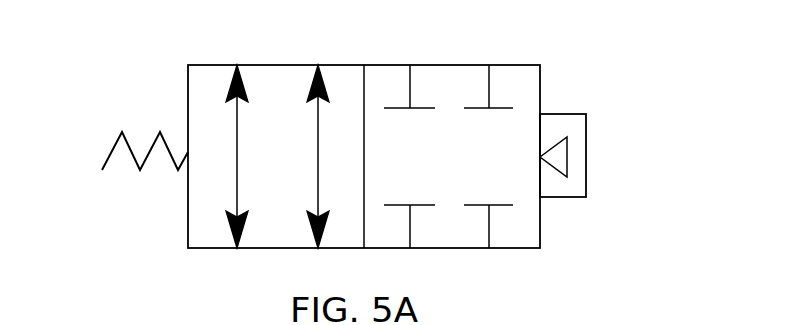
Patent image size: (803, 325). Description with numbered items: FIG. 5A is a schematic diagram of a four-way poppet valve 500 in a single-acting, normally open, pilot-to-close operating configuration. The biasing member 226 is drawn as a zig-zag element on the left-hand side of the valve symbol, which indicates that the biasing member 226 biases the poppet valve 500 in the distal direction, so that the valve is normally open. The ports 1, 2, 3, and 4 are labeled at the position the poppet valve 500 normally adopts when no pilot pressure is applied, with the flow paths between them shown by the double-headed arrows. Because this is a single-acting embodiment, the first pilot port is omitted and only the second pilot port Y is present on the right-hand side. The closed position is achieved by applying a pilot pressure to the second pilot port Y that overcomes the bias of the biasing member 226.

The poppet valve 500 is at (588, 48).
The biasing member 226 is at (113, 146).
The port 1 is at (237, 246).
The port 2 is at (237, 141).
The port 3 is at (318, 141).
The port 4 is at (318, 246).
The second pilot port Y is at (621, 153).